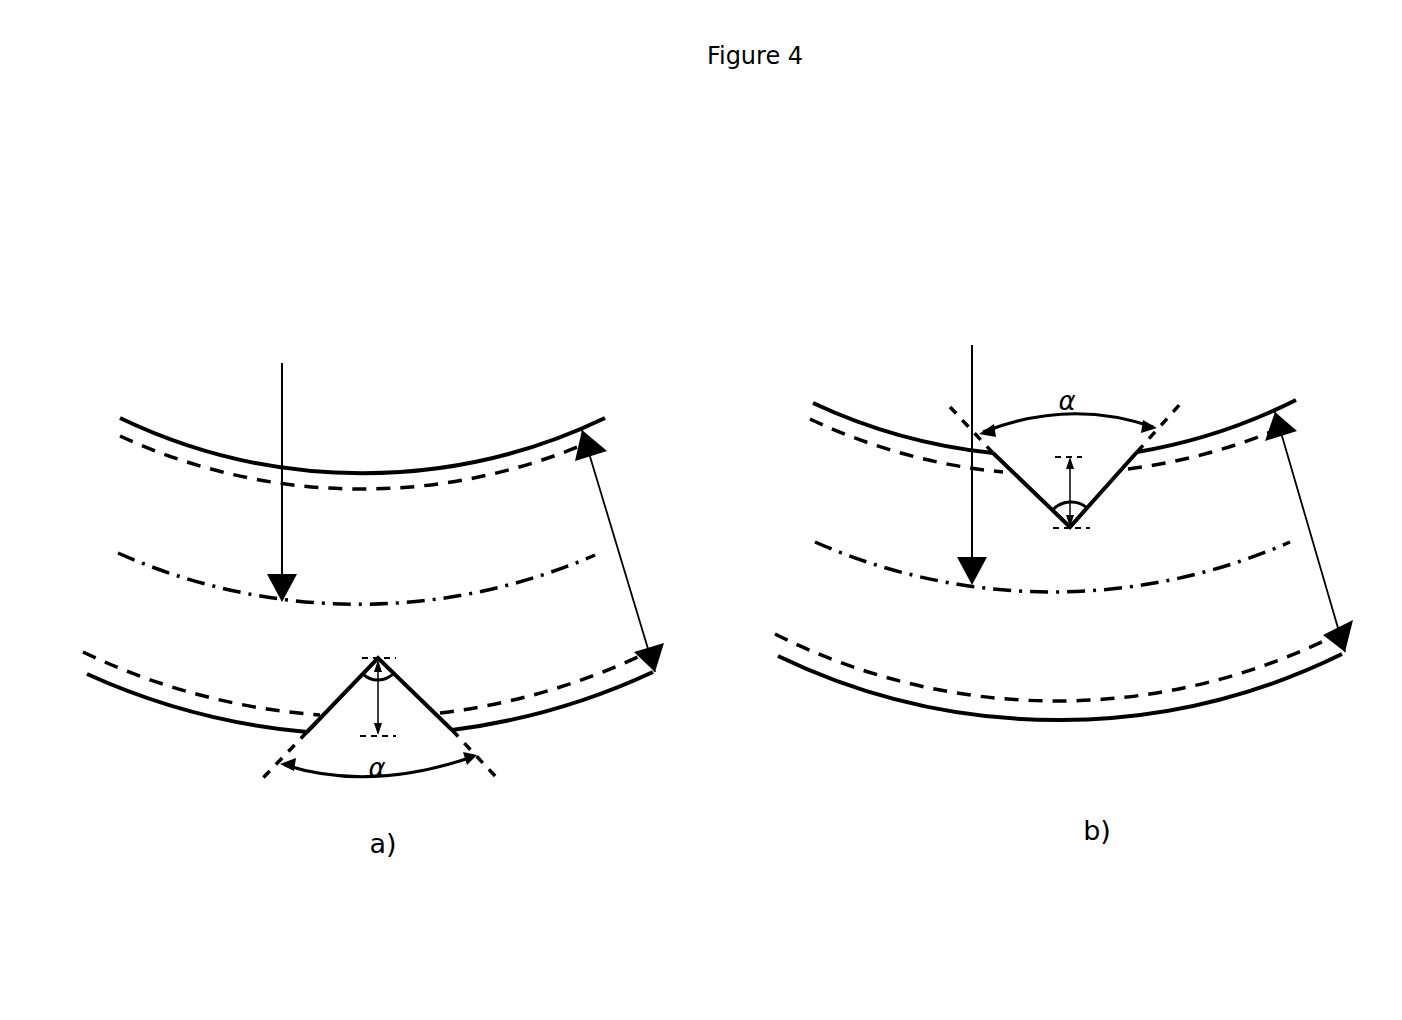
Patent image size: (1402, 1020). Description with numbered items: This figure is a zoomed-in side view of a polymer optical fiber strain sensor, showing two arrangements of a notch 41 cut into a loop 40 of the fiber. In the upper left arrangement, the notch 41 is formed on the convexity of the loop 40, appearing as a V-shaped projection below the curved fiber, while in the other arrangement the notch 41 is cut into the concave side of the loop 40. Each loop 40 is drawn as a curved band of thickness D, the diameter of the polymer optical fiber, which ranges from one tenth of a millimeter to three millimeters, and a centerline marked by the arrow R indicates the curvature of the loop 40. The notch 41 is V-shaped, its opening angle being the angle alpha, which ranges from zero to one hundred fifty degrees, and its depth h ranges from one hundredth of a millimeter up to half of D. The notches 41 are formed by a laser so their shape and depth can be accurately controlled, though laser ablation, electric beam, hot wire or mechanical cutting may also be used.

The loop 40 is at (450, 467).
The notch 41 is at (448, 772).
The radius of curvature R is at (612, 470).
The diameter of the polymer optical fiber D is at (964, 542).
The depth of the V-shaped notch h is at (726, 596).